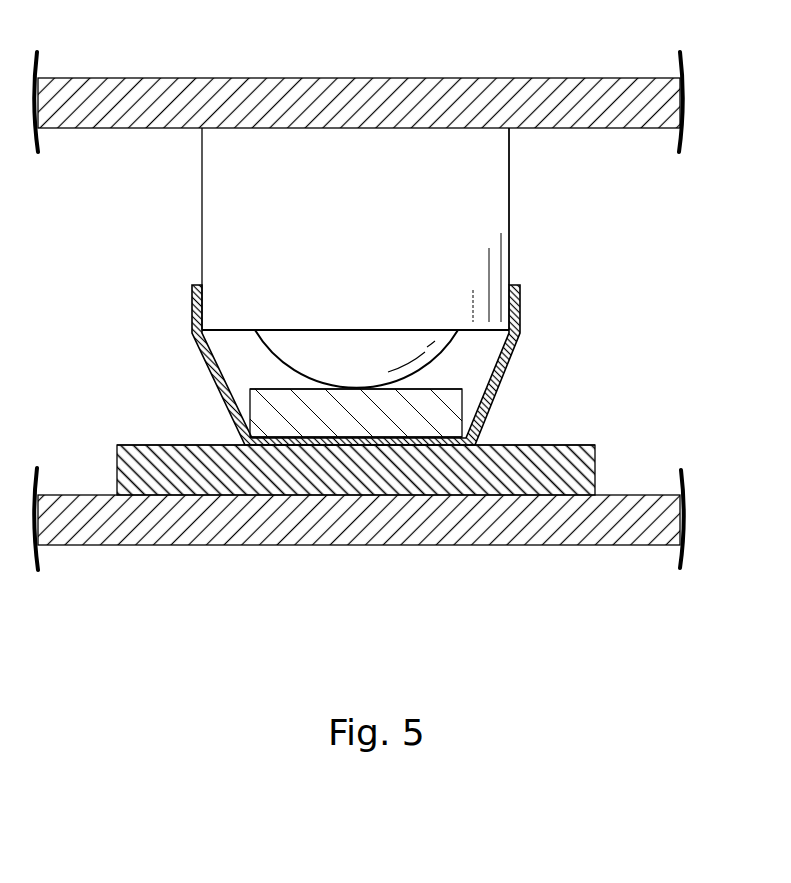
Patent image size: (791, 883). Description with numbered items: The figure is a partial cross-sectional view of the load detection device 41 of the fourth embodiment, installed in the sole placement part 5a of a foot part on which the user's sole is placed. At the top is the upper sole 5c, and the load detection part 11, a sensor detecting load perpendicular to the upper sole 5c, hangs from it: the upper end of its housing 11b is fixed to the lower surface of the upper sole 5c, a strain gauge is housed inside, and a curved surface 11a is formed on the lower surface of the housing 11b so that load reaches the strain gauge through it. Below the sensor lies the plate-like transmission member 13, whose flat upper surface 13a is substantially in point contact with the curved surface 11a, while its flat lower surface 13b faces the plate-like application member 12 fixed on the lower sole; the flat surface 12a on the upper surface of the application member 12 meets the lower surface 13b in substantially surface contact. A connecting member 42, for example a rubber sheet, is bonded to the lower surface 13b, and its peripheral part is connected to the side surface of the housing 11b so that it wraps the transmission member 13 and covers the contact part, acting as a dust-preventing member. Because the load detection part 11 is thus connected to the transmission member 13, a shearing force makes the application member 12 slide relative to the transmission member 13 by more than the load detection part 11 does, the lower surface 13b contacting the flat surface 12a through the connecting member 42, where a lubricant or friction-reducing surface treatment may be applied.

The upper sole 5c is at (600, 92).
The sole placement part 5a is at (623, 535).
The load detection part 11 is at (404, 258).
The curved surface 11a is at (278, 358).
The housing 11b is at (505, 201).
The load detection device 41 is at (178, 221).
The connecting member 42 is at (222, 402).
The transmission member 13 is at (402, 405).
The upper surface 13a is at (447, 389).
The lower surface 13b is at (456, 433).
The application member 12 is at (381, 452).
The flat surface 12a is at (143, 445).